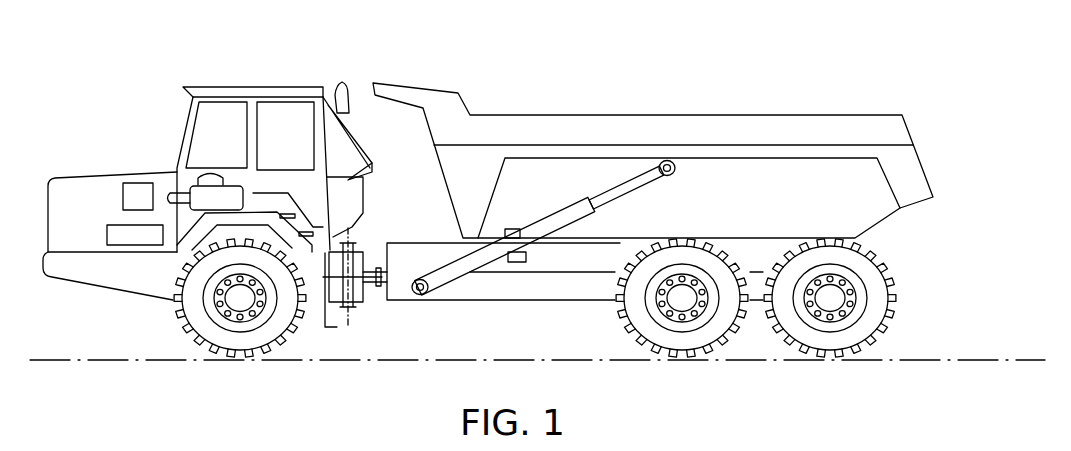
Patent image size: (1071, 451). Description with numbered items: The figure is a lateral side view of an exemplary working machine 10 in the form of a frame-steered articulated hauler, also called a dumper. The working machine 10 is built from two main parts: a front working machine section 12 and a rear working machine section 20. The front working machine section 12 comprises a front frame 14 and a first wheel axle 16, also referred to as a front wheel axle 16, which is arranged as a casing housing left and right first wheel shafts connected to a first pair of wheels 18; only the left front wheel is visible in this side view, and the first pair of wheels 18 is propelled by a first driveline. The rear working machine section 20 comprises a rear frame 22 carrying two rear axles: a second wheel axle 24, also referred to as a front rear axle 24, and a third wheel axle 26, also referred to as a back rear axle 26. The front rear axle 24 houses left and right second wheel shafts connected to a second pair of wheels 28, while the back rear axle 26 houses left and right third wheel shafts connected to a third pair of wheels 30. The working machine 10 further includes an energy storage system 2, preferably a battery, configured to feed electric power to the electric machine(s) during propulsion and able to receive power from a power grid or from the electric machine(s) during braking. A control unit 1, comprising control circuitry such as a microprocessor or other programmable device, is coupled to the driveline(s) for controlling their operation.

The control unit 1 is at (135, 183).
The energy storage system 2 is at (107, 236).
The working machine 10 is at (667, 64).
The front working machine section 12 is at (267, 64).
The front frame 14 is at (347, 310).
The first wheel axle 16 is at (229, 333).
The first pair of wheels 18 is at (240, 320).
The rear working machine section 20 is at (767, 95).
The rear frame 22 is at (491, 288).
The second wheel axle 24 is at (670, 333).
The third wheel axle 26 is at (819, 333).
The second pair of wheels 28 is at (682, 320).
The third pair of wheels 30 is at (830, 320).